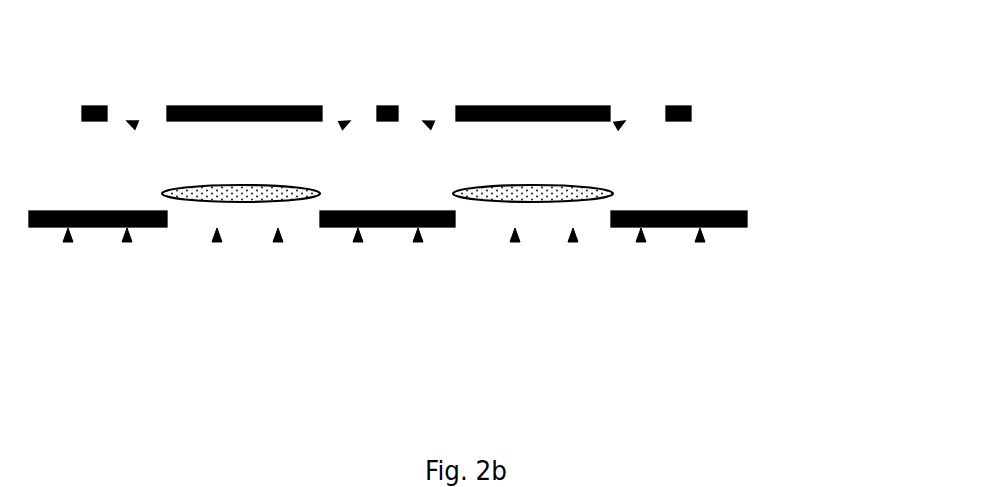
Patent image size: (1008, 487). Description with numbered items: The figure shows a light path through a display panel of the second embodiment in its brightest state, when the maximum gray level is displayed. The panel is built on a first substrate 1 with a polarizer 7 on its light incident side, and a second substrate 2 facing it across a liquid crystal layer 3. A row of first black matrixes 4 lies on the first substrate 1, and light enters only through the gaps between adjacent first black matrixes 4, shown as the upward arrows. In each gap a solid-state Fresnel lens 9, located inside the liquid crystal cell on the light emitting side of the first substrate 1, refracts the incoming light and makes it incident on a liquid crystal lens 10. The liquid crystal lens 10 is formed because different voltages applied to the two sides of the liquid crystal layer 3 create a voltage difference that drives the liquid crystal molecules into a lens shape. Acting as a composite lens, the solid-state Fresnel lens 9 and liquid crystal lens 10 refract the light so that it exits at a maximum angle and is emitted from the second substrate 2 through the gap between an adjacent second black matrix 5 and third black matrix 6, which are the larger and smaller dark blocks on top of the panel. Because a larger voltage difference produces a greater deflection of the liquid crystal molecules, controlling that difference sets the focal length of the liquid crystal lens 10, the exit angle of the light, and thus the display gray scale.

The first substrate 1 is at (456, 258).
The second substrate 2 is at (429, 140).
The liquid crystal layer 3 is at (387, 193).
The first black matrix 4 is at (454, 223).
The second black matrix 5 is at (414, 71).
The third black matrix 6 is at (428, 88).
The polarizer 7 is at (458, 299).
The solid-state Fresnel lens 9 is at (544, 220).
The liquid crystal lens 10 is at (528, 193).